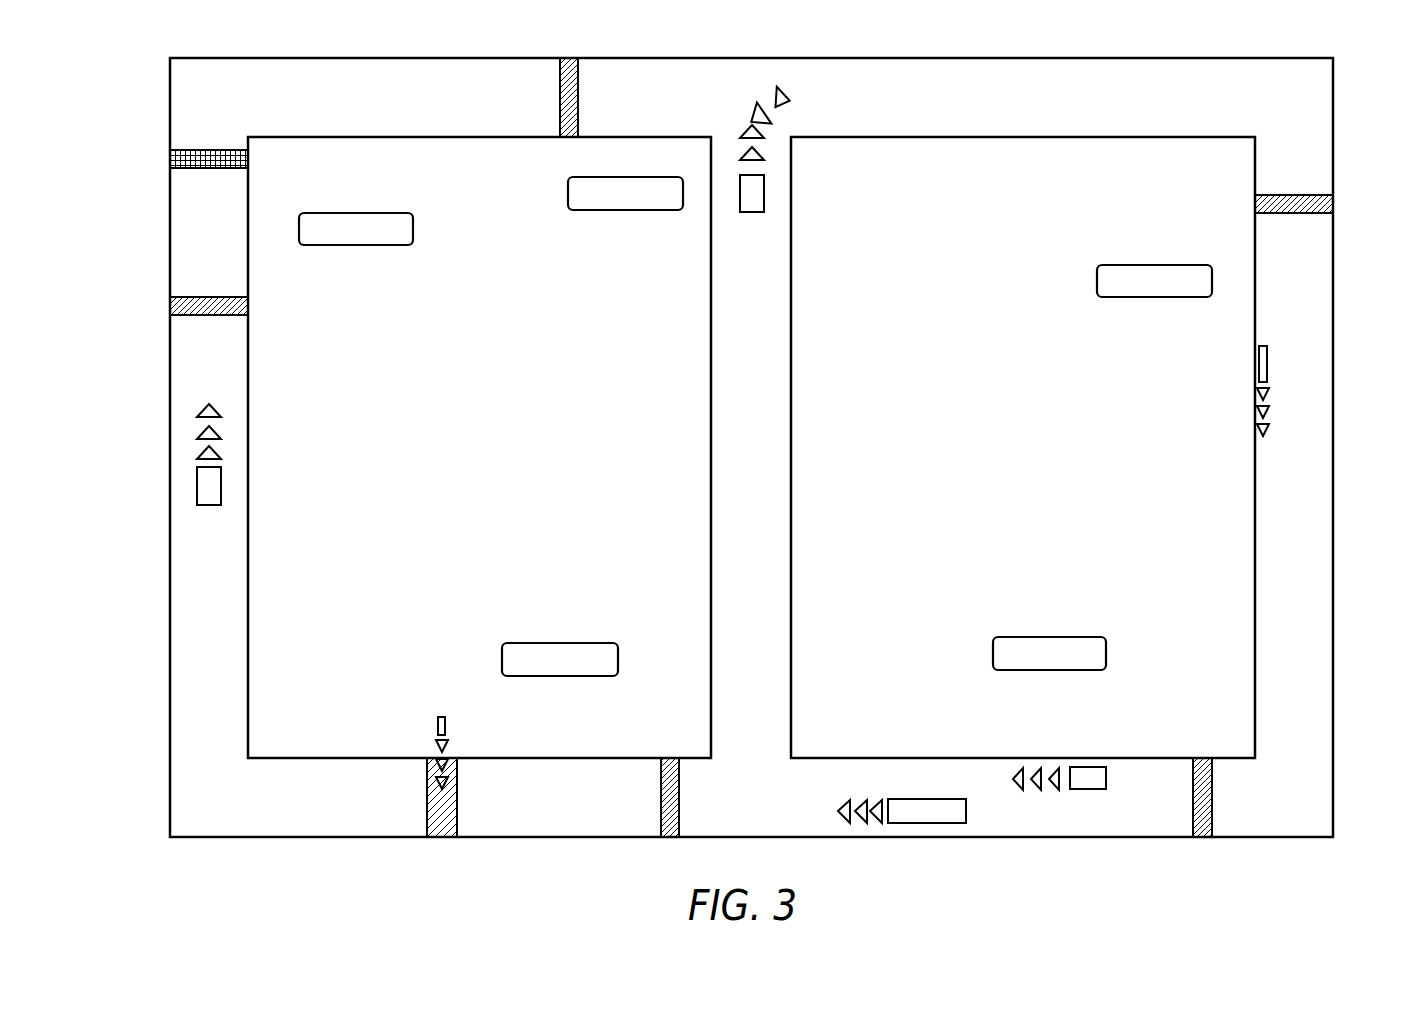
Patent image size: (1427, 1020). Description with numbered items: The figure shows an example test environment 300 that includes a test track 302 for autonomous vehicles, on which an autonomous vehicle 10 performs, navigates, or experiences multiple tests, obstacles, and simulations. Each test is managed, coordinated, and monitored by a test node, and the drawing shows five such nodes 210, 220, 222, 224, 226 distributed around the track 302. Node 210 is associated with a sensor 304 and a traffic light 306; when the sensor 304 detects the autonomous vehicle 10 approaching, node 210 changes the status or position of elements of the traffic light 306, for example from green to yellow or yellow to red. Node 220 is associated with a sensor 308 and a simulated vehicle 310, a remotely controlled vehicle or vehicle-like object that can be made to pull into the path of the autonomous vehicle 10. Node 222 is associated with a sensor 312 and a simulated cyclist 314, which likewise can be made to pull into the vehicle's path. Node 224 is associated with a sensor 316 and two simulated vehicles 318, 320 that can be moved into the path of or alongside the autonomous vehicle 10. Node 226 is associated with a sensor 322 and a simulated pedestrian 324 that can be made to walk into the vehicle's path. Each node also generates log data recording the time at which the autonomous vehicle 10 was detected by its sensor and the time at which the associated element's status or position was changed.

The environment 300 is at (735, 420).
The test track 302 is at (170, 736).
The sensor 304 is at (170, 307).
The traffic light 306 is at (170, 160).
The sensor 308 is at (570, 58).
The simulated vehicle 310 is at (764, 200).
The sensor 312 is at (1333, 204).
The simulated cyclist 314 is at (1259, 368).
The sensor 316 is at (1202, 758).
The simulated vehicle 318 is at (1090, 767).
The simulated vehicle 320 is at (934, 799).
The sensor 322 is at (668, 758).
The simulated pedestrian 324 is at (441, 716).
The autonomous vehicle 10 is at (197, 486).
The node 210 is at (341, 245).
The node 220 is at (612, 210).
The node 222 is at (1116, 265).
The node 224 is at (1010, 637).
The node 226 is at (525, 643).